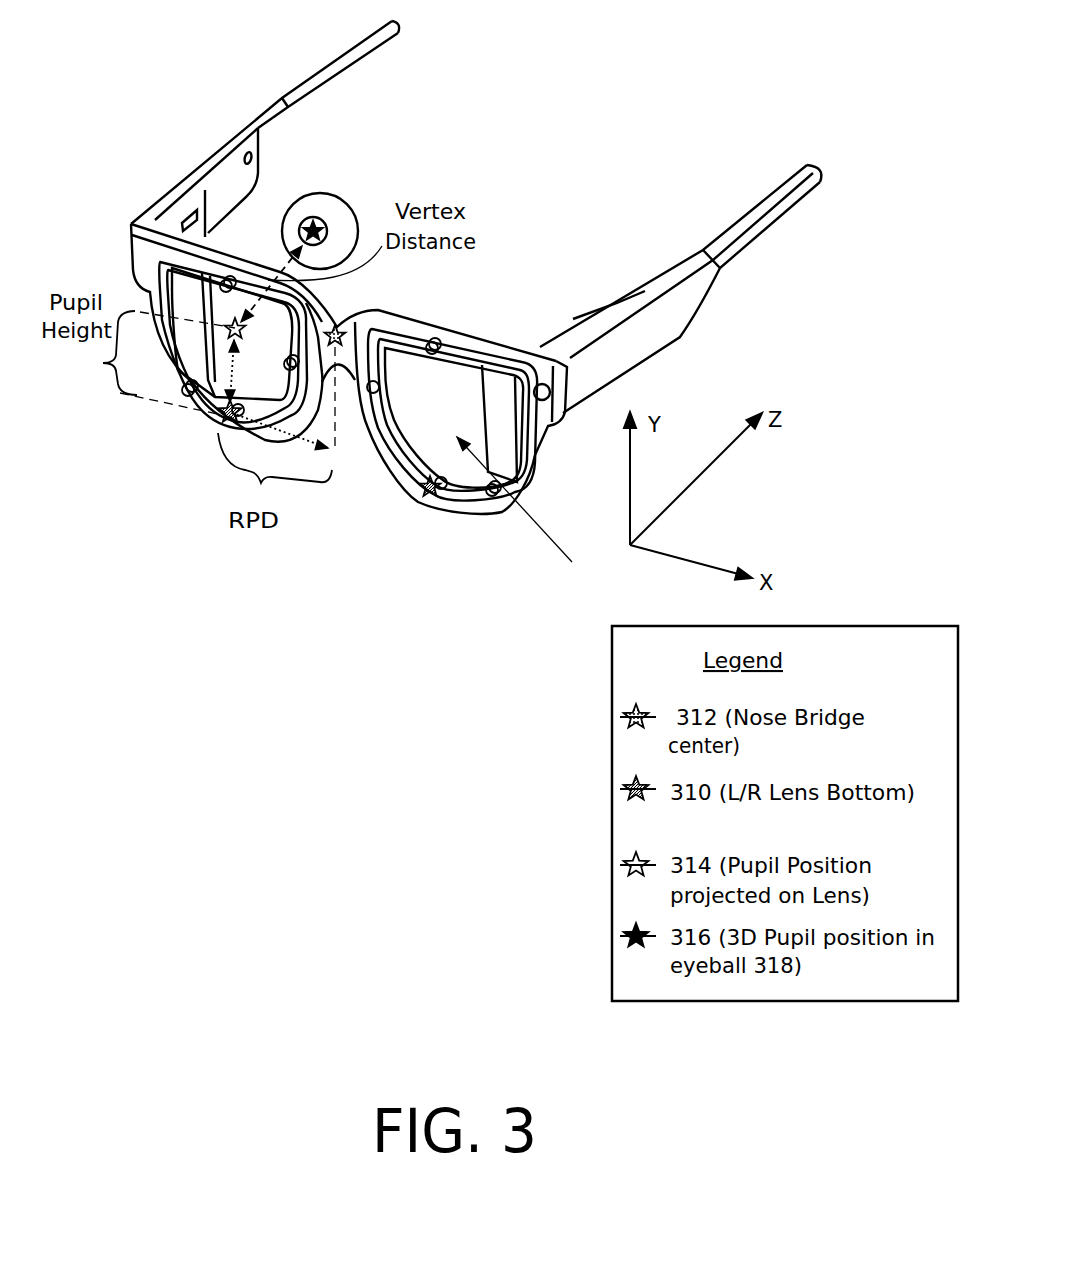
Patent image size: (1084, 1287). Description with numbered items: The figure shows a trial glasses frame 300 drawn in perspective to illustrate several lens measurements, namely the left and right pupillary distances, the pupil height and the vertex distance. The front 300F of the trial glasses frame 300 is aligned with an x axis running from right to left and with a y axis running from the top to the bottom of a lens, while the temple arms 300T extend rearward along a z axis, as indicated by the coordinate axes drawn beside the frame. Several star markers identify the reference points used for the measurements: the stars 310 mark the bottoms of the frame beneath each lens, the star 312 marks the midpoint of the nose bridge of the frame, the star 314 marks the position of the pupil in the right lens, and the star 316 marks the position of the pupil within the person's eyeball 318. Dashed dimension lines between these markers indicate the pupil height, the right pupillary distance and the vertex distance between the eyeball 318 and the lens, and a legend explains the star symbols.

The trial glasses frame 300 is at (440, 1058).
The temple arms 300T is at (673, 265).
The front 300F is at (530, 516).
The stars representing bottoms of the frame 310 is at (225, 412).
The star representing midpoint of the nose bridge 312 is at (338, 325).
The star representing position of the pupil in the right lens 314 is at (238, 333).
The star representing position of the pupil in the eyeball 316 is at (325, 218).
The eyeball 318 is at (353, 222).